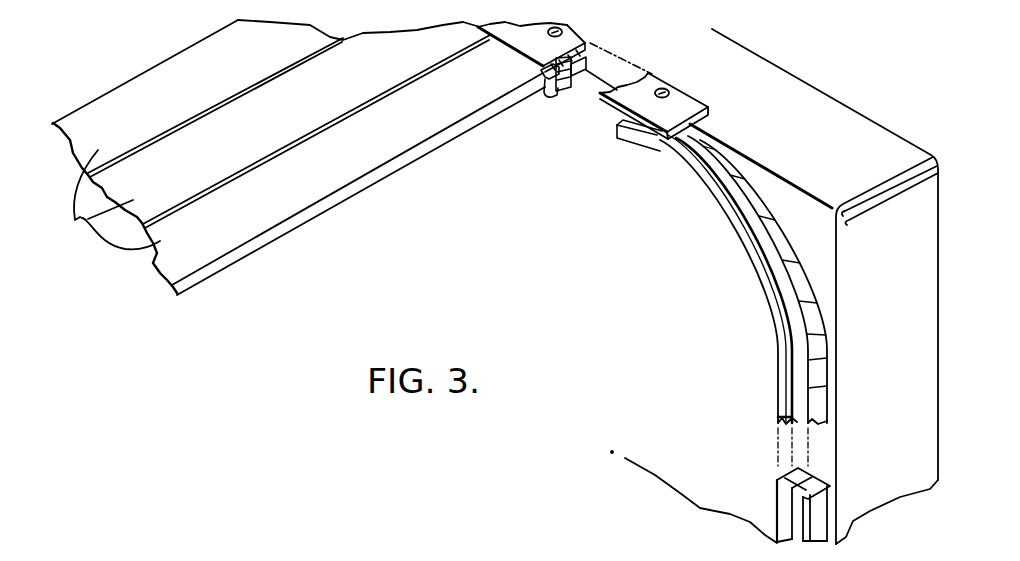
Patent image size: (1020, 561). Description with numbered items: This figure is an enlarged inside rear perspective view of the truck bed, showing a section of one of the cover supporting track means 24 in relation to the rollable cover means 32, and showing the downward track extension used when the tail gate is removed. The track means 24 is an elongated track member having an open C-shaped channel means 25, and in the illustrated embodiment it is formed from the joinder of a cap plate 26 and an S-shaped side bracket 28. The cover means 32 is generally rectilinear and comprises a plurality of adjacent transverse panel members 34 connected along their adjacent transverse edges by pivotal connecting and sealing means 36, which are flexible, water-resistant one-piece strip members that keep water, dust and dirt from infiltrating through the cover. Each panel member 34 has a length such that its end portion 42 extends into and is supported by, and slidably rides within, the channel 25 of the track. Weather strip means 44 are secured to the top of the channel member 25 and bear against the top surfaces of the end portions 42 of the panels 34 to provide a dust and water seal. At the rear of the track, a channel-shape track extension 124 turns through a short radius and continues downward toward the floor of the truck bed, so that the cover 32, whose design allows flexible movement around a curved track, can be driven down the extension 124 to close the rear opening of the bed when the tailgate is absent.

The cover supporting track means 24 is at (548, 107).
The open C-shaped channel means 25 is at (567, 90).
The cap plate 26 is at (470, 32).
The S-shaped side bracket 28 is at (588, 68).
The rollable cover means 32 is at (267, 252).
The transverse panel members 34 is at (106, 204).
The pivotal connecting and sealing means 36 is at (288, 150).
The end portion of panel 42 is at (448, 124).
The weather strip means 44 is at (541, 73).
The channel-shape track extension 124 is at (763, 292).